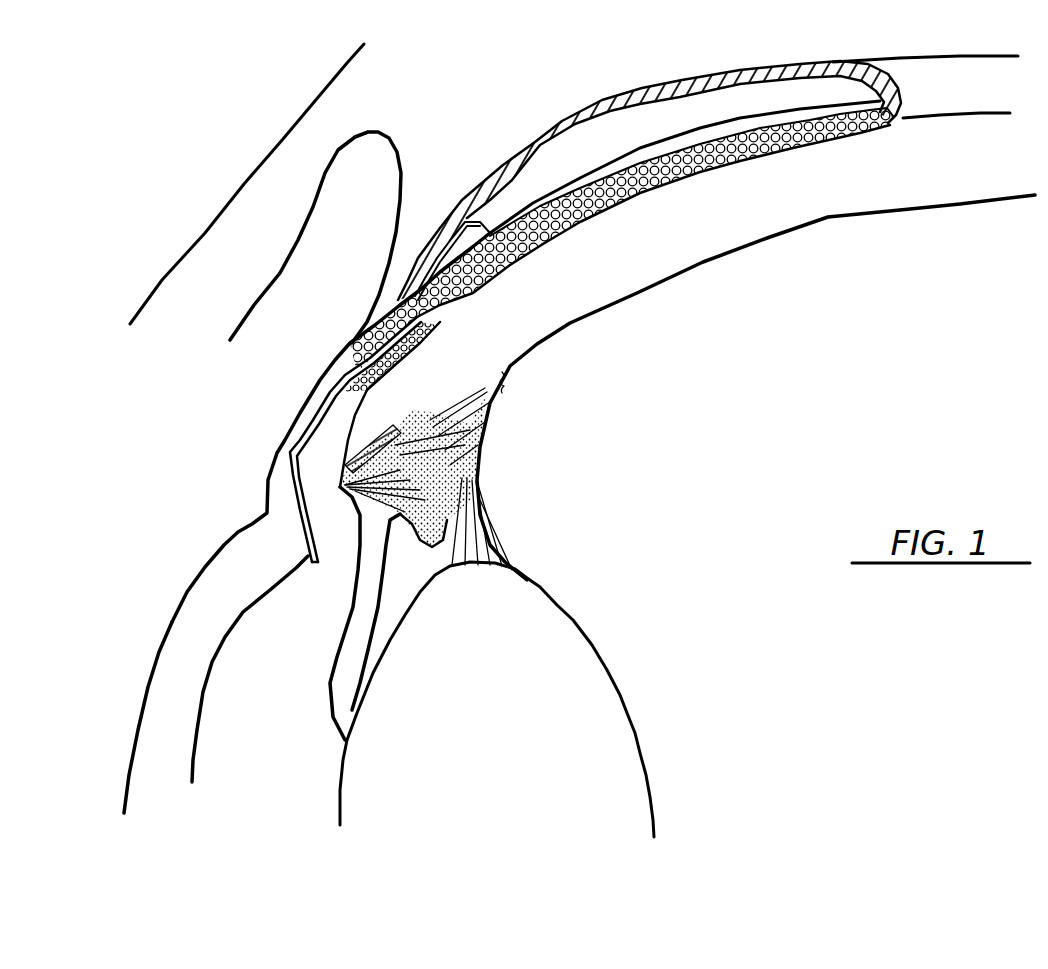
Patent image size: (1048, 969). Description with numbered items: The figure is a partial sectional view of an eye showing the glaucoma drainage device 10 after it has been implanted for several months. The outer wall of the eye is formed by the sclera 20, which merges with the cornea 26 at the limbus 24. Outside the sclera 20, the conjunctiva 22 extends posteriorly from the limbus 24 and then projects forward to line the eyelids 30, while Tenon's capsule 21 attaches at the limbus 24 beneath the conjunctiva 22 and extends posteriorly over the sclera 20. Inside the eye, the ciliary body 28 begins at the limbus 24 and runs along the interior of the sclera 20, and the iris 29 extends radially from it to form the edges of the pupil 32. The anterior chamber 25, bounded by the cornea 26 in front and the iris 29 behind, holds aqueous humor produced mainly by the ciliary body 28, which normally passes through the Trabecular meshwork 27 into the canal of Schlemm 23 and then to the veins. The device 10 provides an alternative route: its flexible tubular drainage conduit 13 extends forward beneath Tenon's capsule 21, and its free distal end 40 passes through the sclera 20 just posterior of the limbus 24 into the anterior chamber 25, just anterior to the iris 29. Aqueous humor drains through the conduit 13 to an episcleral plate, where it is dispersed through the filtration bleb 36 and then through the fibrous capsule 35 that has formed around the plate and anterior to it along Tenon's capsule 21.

The glaucoma drainage device 10 is at (647, 143).
The drainage conduit 13 is at (343, 375).
The sclera 20 is at (917, 112).
The Tenon's capsule 21 is at (562, 120).
The conjunctiva 22 is at (325, 165).
The canal of Schlemm 23 is at (350, 460).
The limbus 24 is at (250, 520).
The anterior chamber 25 is at (253, 637).
The cornea 26 is at (127, 715).
The Trabecular meshwork 27 is at (478, 485).
The ciliary body 28 is at (487, 428).
The iris 29 is at (330, 685).
The eyelids 30 is at (210, 238).
The pupil 32 is at (340, 793).
The fibrous capsule 35 is at (694, 98).
The filtration bleb 36 is at (767, 90).
The distal end 40 is at (315, 573).